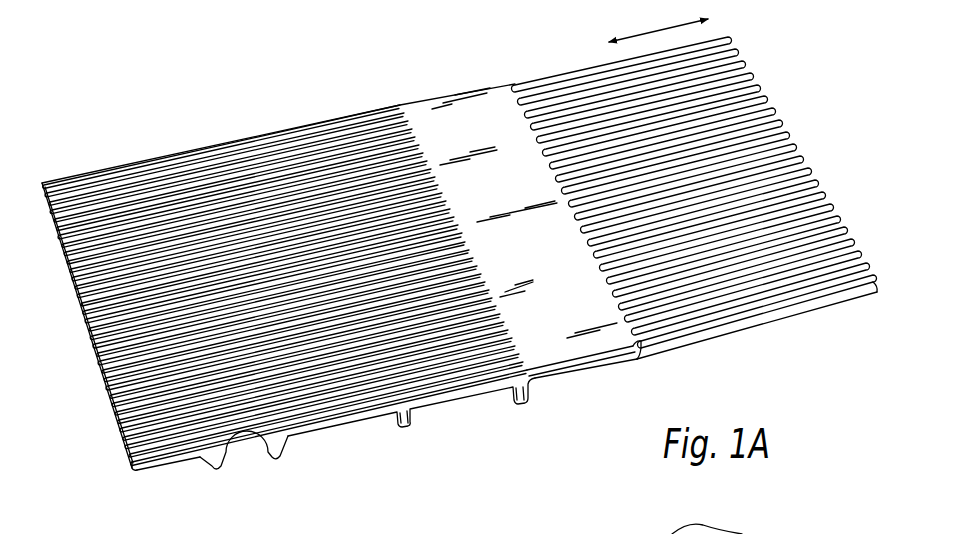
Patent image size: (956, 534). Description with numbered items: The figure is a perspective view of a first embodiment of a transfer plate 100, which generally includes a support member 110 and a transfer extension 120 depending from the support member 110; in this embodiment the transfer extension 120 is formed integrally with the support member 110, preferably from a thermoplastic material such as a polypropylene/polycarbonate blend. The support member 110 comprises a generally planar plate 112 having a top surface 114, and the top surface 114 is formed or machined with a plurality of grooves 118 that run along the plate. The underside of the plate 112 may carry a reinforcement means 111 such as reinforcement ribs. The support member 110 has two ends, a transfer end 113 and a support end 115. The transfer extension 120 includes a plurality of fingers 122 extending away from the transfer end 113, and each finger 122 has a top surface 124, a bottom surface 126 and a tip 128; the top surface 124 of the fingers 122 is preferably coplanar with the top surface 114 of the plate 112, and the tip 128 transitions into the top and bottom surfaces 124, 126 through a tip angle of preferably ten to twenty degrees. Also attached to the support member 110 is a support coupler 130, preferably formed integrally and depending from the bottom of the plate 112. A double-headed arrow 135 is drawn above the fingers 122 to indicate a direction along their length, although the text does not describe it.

The transfer plate 100 is at (93, 143).
The support member 110 is at (316, 191).
The reinforcement means 111 is at (322, 433).
The planar plate 112 is at (85, 338).
The transfer end 113 is at (633, 385).
The top surface 114 is at (323, 280).
The support end 115 is at (101, 433).
The grooves 118 is at (413, 357).
The transfer extension 120 is at (602, 124).
The fingers 122 is at (820, 187).
The finger top surface 124 is at (857, 257).
The finger bottom surface 126 is at (792, 324).
The tip 128 is at (883, 292).
The support coupler 130 is at (239, 461).
The fin length direction arrow 135 is at (658, 24).